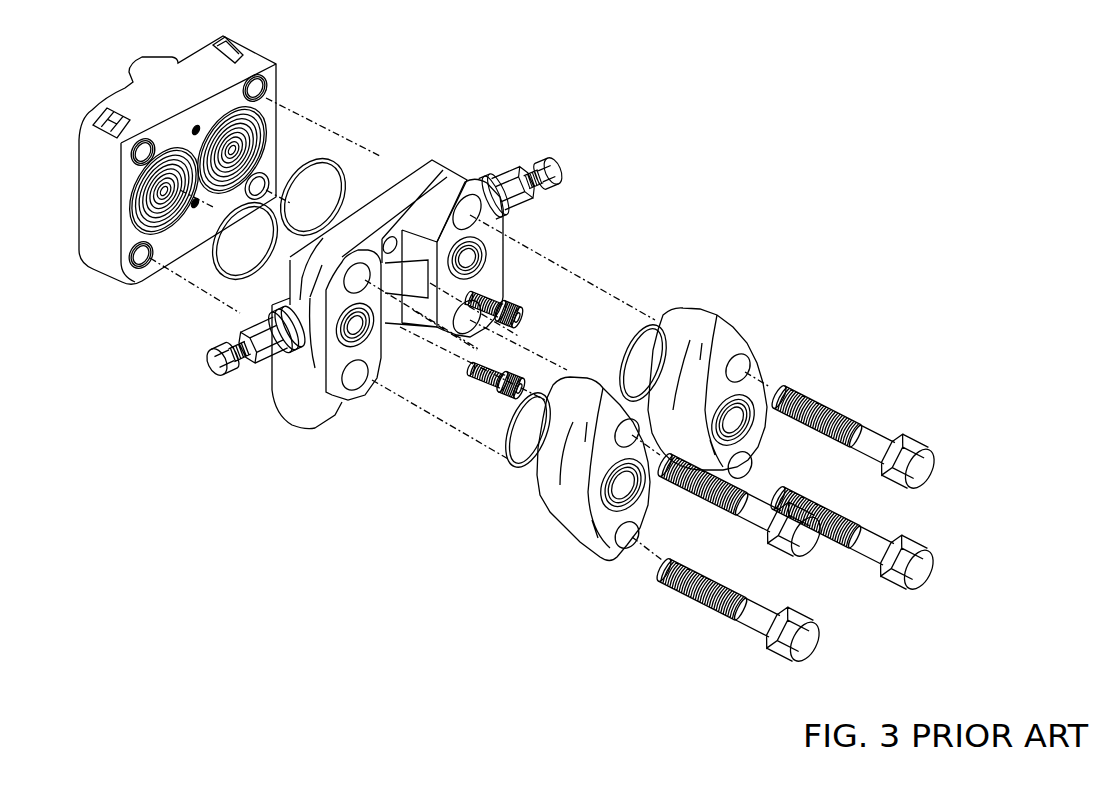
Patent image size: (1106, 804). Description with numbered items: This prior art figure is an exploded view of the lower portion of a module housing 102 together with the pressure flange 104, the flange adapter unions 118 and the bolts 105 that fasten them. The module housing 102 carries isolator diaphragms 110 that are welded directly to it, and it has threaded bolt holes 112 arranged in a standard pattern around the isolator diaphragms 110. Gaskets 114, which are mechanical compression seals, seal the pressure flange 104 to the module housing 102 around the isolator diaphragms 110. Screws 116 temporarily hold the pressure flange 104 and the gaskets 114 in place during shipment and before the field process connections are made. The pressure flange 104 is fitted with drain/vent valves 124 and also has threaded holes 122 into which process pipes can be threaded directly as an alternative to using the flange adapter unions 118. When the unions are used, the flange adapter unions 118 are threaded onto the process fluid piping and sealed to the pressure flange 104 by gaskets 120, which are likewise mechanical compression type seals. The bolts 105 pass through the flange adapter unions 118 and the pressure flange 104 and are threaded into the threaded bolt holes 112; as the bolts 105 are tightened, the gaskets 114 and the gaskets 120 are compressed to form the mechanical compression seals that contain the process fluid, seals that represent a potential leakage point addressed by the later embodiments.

The module housing 102 is at (250, 58).
The pressure flange 104 is at (462, 170).
The bolts 105 is at (933, 488).
The isolator diaphragms 110 is at (250, 134).
The threaded bolt holes 112 is at (264, 92).
The gaskets 114 is at (335, 160).
The screws 116 is at (523, 312).
The flange adapter unions 118 is at (713, 322).
The gaskets 120 is at (640, 333).
The threaded holes 122 is at (473, 259).
The drain/vent valves 124 is at (538, 207).